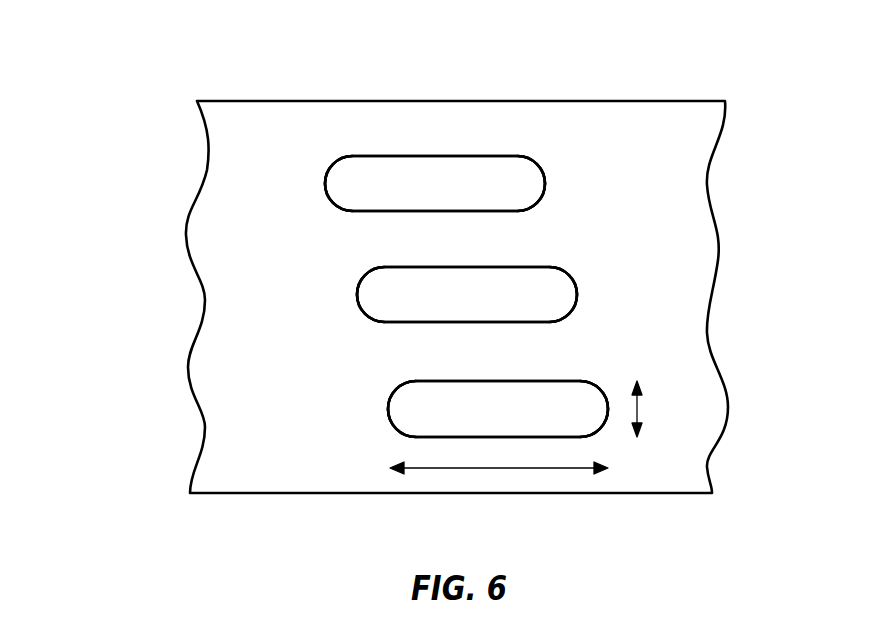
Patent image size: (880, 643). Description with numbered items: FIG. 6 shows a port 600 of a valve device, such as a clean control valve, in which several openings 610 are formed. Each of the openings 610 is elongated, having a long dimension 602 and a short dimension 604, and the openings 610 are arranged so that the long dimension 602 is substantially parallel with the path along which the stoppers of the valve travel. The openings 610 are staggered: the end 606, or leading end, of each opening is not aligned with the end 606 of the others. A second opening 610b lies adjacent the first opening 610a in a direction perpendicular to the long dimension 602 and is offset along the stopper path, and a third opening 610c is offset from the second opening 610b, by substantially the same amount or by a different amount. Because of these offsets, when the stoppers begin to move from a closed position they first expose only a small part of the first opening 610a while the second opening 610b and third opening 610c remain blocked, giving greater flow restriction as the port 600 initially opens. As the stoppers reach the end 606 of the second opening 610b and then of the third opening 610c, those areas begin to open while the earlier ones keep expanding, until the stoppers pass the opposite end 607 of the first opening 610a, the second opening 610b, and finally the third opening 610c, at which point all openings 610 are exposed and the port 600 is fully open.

The port 600 is at (165, 103).
The long dimension 602 is at (501, 470).
The short dimension 604 is at (640, 408).
The end 606 is at (325, 178).
The opposite end 607 is at (541, 197).
The openings 610 is at (500, 190).
The first opening 610a is at (419, 178).
The second opening 610b is at (410, 295).
The third opening 610c is at (437, 425).